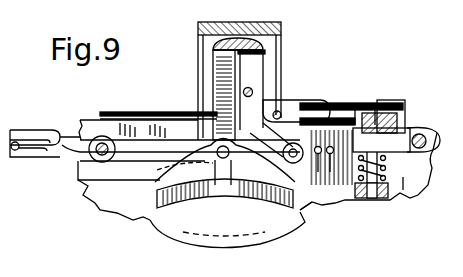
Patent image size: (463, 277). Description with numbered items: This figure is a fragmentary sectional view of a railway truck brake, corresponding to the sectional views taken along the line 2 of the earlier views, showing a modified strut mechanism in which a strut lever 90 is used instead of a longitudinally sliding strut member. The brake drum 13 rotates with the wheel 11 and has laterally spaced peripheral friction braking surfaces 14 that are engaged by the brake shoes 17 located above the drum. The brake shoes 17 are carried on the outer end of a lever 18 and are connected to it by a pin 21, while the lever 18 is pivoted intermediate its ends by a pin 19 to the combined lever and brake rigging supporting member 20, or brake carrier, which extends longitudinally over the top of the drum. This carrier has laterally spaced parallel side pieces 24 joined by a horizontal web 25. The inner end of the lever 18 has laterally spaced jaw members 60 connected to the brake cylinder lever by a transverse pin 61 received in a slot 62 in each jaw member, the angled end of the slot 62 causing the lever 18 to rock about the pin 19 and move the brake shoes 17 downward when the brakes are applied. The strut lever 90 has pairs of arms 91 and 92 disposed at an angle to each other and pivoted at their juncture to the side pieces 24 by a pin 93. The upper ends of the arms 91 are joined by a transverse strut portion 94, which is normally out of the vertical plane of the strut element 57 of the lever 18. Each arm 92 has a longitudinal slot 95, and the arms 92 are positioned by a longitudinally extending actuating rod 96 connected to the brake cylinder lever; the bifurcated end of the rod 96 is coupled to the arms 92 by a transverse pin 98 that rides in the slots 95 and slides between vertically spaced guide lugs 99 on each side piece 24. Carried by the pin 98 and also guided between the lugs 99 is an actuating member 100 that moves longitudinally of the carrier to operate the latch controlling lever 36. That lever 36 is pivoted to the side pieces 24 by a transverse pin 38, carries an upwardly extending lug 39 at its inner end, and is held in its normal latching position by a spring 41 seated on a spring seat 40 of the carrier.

The housing 2 is at (104, 214).
The wheel 11 is at (85, 196).
The brake drum 13 is at (160, 226).
The friction braking surfaces 14 is at (308, 206).
The brake shoes 17 is at (199, 190).
The lever 18 is at (70, 133).
The pin 19 is at (106, 162).
The combined lever and brake rigging supporting member 20 is at (403, 190).
The pin 21 is at (224, 160).
The side pieces 24 is at (410, 133).
The web 25 is at (280, 22).
The latch controlling lever 36 is at (422, 133).
The pin 38 is at (412, 176).
The lug 39 is at (372, 113).
The spring seat 40 is at (363, 198).
The spring 41 is at (381, 197).
The strut element 57 is at (220, 85).
The jaw members 60 is at (35, 130).
The pin 61 is at (15, 151).
The slot 62 is at (43, 150).
The strut lever 90 is at (213, 50).
The arms 91 is at (262, 66).
The arms 92 is at (308, 108).
The pin 93 is at (262, 92).
The strut portion 94 is at (260, 33).
The slot 95 is at (283, 155).
The actuating rod 96 is at (145, 112).
The pin 98 is at (330, 157).
The guide lugs 99 is at (385, 100).
The actuating member 100 is at (349, 118).